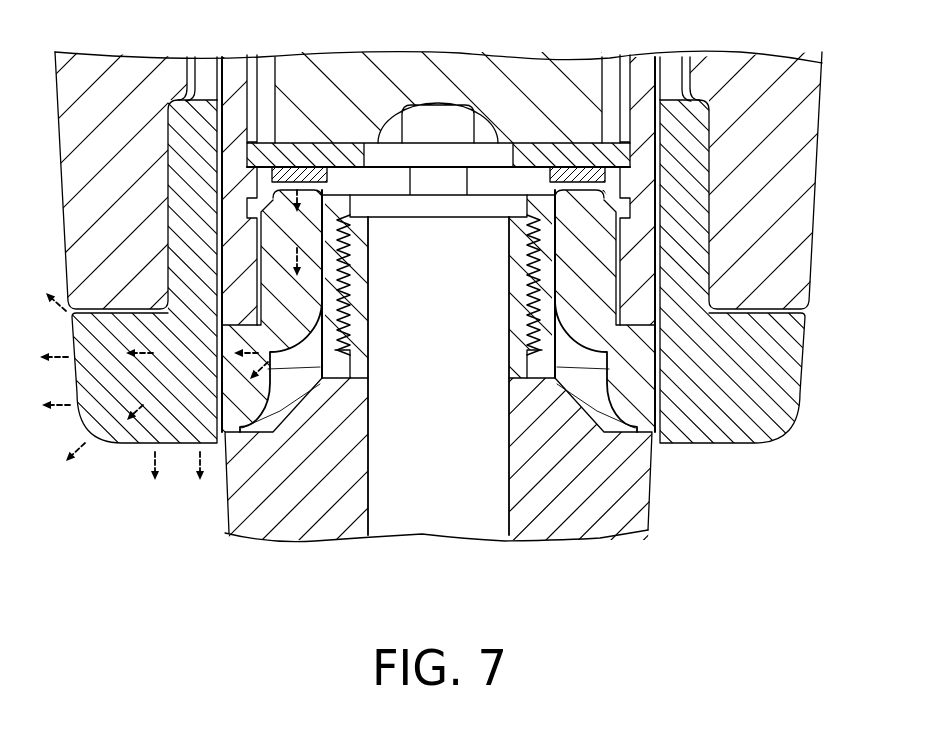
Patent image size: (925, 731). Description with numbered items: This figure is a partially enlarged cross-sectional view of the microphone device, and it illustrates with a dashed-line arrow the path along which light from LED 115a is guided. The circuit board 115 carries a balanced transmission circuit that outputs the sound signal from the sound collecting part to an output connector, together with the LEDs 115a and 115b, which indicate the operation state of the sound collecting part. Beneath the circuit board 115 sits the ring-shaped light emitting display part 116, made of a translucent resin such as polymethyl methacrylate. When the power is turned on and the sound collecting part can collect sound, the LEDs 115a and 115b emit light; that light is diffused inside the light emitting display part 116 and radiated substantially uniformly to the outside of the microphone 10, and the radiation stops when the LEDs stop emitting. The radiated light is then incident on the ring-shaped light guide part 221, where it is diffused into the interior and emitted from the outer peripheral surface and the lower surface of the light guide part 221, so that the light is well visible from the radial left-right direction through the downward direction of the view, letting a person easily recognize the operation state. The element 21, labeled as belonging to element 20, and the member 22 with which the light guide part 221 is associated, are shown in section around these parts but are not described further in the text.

The microphone 10 is at (660, 518).
The housing assembly 20 is at (462, 365).
The housing body 21 is at (817, 130).
The sleeve member 22 is at (462, 365).
The light guide part 221 is at (120, 446).
The circuit board 115 is at (533, 143).
The LED 115a is at (329, 174).
The LED 115b is at (550, 172).
The light emitting display part 116 is at (552, 243).